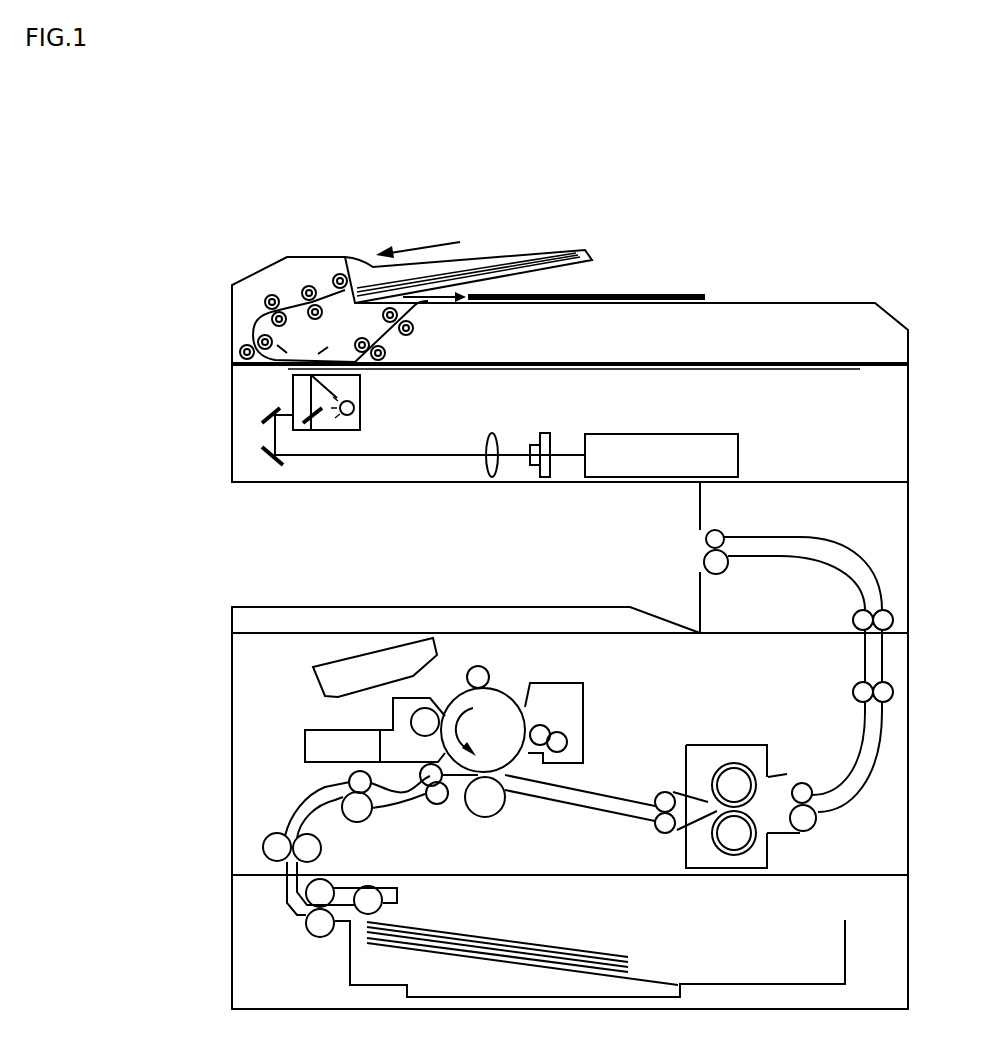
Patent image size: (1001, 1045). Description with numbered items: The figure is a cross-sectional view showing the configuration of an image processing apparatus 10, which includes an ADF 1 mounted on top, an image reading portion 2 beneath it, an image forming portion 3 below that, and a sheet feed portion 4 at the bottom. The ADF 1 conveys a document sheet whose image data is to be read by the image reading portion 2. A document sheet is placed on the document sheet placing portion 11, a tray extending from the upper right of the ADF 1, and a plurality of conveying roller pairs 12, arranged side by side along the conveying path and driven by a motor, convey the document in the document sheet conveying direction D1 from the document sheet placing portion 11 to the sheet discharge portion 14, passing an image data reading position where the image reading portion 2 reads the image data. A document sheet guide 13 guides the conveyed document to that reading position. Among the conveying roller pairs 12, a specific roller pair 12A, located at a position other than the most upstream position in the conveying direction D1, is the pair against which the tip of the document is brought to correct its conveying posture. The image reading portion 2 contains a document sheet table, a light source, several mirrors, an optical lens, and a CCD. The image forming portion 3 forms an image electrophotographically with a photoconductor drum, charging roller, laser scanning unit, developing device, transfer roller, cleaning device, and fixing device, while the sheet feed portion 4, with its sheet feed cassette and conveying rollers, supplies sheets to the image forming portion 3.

The image processing apparatus 10 is at (217, 215).
The ADF 1 is at (232, 311).
The document sheet placing portion 11 is at (522, 252).
The conveying roller pairs 12 is at (309, 285).
The specific roller pair 12A is at (272, 294).
The document sheet guide 13 is at (302, 359).
The sheet discharge portion 14 is at (757, 303).
The document sheet conveying direction D1 is at (425, 242).
The image reading portion 2 is at (232, 435).
The image forming portion 3 is at (254, 655).
The sheet feed portion 4 is at (232, 945).